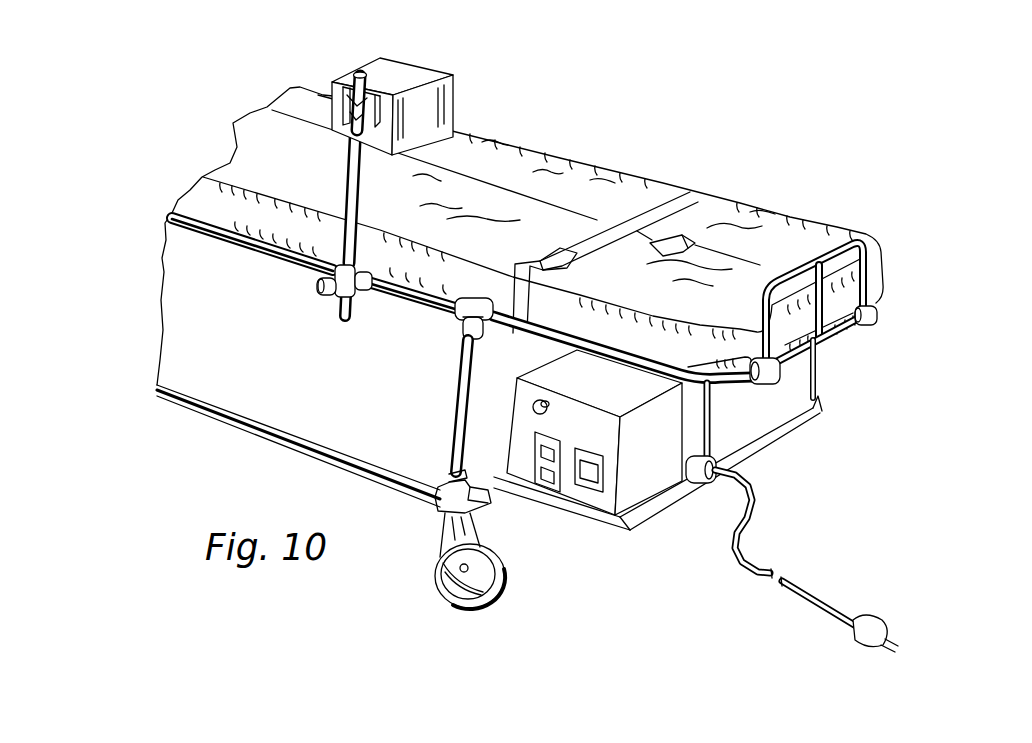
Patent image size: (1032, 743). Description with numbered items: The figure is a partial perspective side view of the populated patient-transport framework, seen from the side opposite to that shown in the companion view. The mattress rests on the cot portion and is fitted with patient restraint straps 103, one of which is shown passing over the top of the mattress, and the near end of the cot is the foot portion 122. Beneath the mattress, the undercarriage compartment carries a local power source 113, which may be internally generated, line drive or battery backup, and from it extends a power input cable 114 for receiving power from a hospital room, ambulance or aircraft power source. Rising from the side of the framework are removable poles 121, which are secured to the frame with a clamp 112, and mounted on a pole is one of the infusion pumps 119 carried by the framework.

The patient restraint straps 103 is at (663, 210).
The clamp 112 is at (326, 298).
The local power source 113 is at (774, 398).
The power input cable 114 is at (748, 553).
The infusion pumps 119 is at (410, 76).
The removable poles 121 is at (277, 241).
The foot portion 122 is at (790, 225).